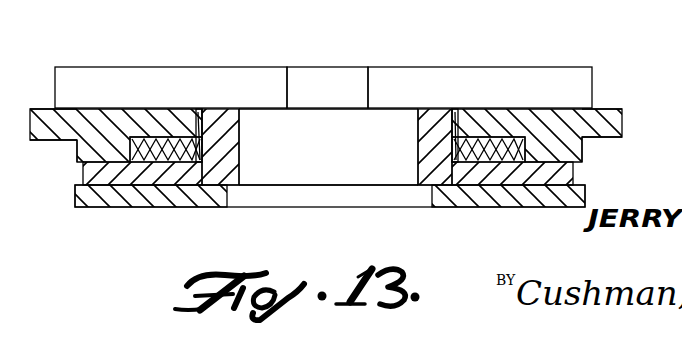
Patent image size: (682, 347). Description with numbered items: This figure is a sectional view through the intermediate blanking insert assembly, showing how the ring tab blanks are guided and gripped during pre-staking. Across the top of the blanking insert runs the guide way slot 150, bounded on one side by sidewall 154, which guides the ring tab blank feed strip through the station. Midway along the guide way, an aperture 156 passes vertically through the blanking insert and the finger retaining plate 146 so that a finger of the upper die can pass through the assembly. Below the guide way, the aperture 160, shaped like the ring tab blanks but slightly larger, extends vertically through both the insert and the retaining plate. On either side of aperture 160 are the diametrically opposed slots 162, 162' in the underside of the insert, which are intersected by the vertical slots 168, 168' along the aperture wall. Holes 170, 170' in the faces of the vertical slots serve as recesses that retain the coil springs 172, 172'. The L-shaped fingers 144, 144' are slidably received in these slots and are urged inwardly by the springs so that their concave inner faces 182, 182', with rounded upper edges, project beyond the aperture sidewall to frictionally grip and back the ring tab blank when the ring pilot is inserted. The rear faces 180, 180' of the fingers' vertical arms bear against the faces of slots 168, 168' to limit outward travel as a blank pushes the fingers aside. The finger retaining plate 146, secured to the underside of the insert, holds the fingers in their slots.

The guide way slot 150 is at (171, 69).
The aperture 156 is at (339, 72).
The sidewall 154 is at (480, 73).
The hole 170' is at (116, 102).
The coil spring 172' is at (151, 92).
The vertical slot 168' is at (233, 118).
The rear face 180' is at (191, 189).
The finger 144' is at (259, 147).
The inner face 182' is at (278, 147).
The slot 162' is at (112, 175).
The aperture 160 is at (328, 147).
The finger 144 is at (406, 147).
The inner face 182 is at (386, 147).
The hole 170 is at (537, 99).
The coil spring 172 is at (627, 123).
The vertical slot 168 is at (493, 117).
The rear face 180 is at (490, 187).
The slot 162 is at (558, 170).
The finger retaining plate 146 is at (330, 217).